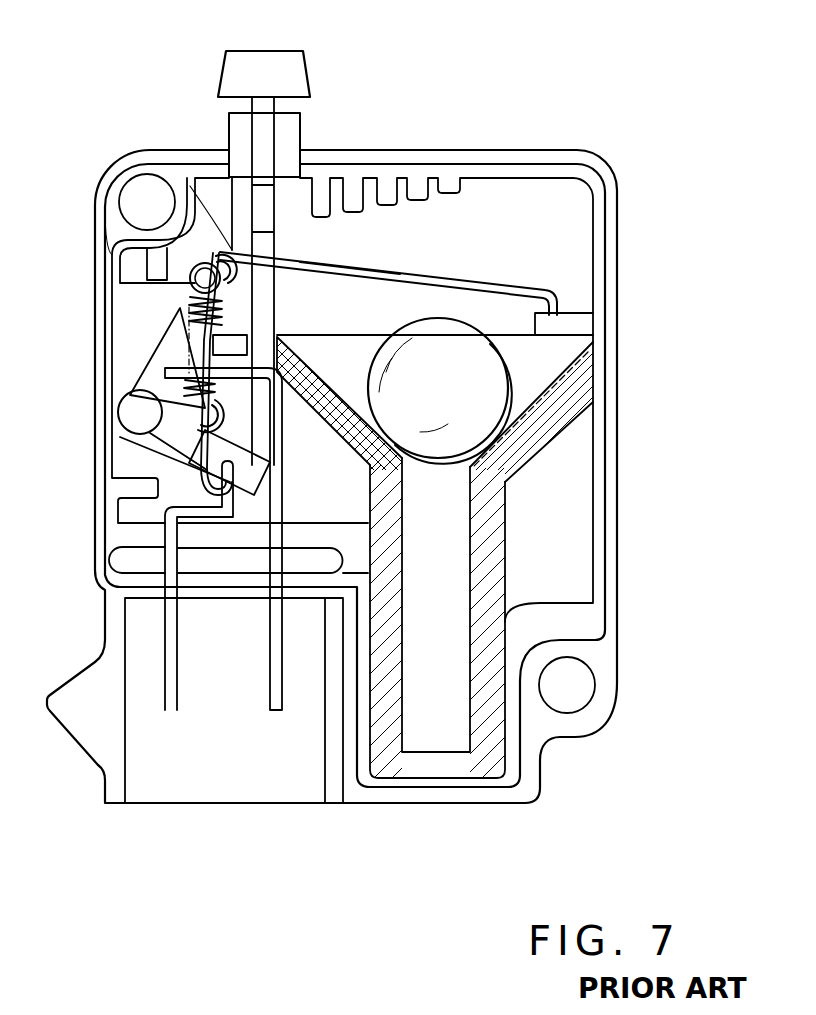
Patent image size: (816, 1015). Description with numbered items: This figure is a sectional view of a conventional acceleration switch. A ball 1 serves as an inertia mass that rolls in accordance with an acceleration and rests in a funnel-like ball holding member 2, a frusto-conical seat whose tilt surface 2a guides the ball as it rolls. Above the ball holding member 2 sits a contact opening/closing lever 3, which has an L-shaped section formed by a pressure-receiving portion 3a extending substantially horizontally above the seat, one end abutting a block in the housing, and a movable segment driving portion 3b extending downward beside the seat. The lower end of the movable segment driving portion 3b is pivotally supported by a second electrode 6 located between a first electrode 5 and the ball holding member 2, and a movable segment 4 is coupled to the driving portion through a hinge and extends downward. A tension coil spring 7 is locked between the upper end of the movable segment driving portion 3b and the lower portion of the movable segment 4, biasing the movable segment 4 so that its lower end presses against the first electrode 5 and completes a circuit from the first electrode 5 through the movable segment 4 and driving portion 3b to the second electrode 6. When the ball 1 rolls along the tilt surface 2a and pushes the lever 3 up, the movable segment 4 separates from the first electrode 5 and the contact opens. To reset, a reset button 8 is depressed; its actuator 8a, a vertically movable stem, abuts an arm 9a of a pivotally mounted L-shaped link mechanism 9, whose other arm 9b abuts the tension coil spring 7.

The ball 1 is at (480, 358).
The ball holding member 2 is at (505, 530).
The tilt surface 2a is at (300, 348).
The contact opening/closing lever 3 is at (474, 285).
The pressure-receiving portion 3a is at (385, 262).
The movable segment driving portion 3b is at (195, 272).
The movable segment 4 is at (173, 452).
The first electrode 5 is at (167, 537).
The second electrode 6 is at (285, 490).
The tension coil spring 7 is at (222, 388).
The reset button 8 is at (305, 62).
The actuator 8a is at (270, 292).
The link mechanism 9 is at (112, 412).
The arm 9a is at (250, 483).
The arm 9b is at (170, 352).